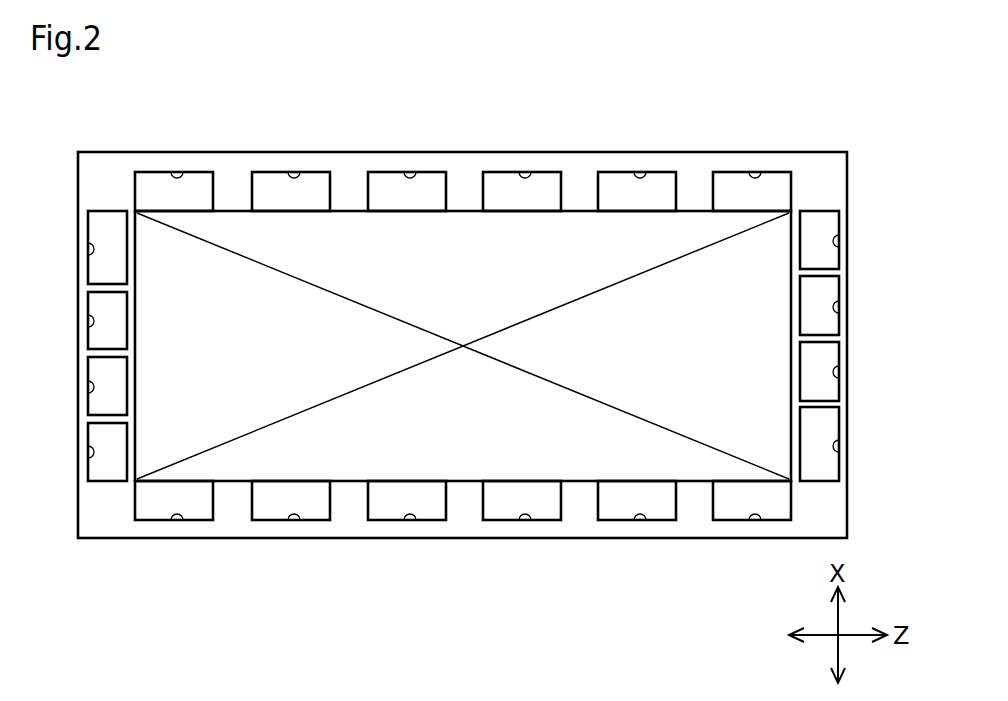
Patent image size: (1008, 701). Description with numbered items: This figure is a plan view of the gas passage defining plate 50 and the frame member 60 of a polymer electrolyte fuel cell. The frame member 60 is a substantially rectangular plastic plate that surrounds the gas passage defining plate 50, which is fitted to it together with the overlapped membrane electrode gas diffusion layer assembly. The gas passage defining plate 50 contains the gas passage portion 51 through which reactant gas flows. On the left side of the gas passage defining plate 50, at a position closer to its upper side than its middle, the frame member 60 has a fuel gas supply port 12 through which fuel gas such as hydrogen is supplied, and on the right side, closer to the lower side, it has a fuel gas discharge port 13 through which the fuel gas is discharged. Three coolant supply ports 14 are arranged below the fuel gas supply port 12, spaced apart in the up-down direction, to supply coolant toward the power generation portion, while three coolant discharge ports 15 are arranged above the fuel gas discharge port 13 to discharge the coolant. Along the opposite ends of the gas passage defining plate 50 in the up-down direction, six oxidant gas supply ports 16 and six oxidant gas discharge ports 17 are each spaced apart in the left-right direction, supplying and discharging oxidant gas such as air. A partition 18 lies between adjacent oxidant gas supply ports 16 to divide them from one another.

The fuel gas supply port 12 is at (88, 249).
The fuel gas discharge port 13 is at (840, 446).
The coolant supply ports 14 is at (88, 321).
The coolant discharge ports 15 is at (840, 241).
The oxidant gas supply ports 16 is at (177, 514).
The oxidant gas discharge ports 17 is at (177, 167).
The partition 18 is at (232, 503).
The gas passage defining plate 50 is at (688, 197).
The gas passage portion 51 is at (578, 233).
The frame member 60 is at (815, 152).